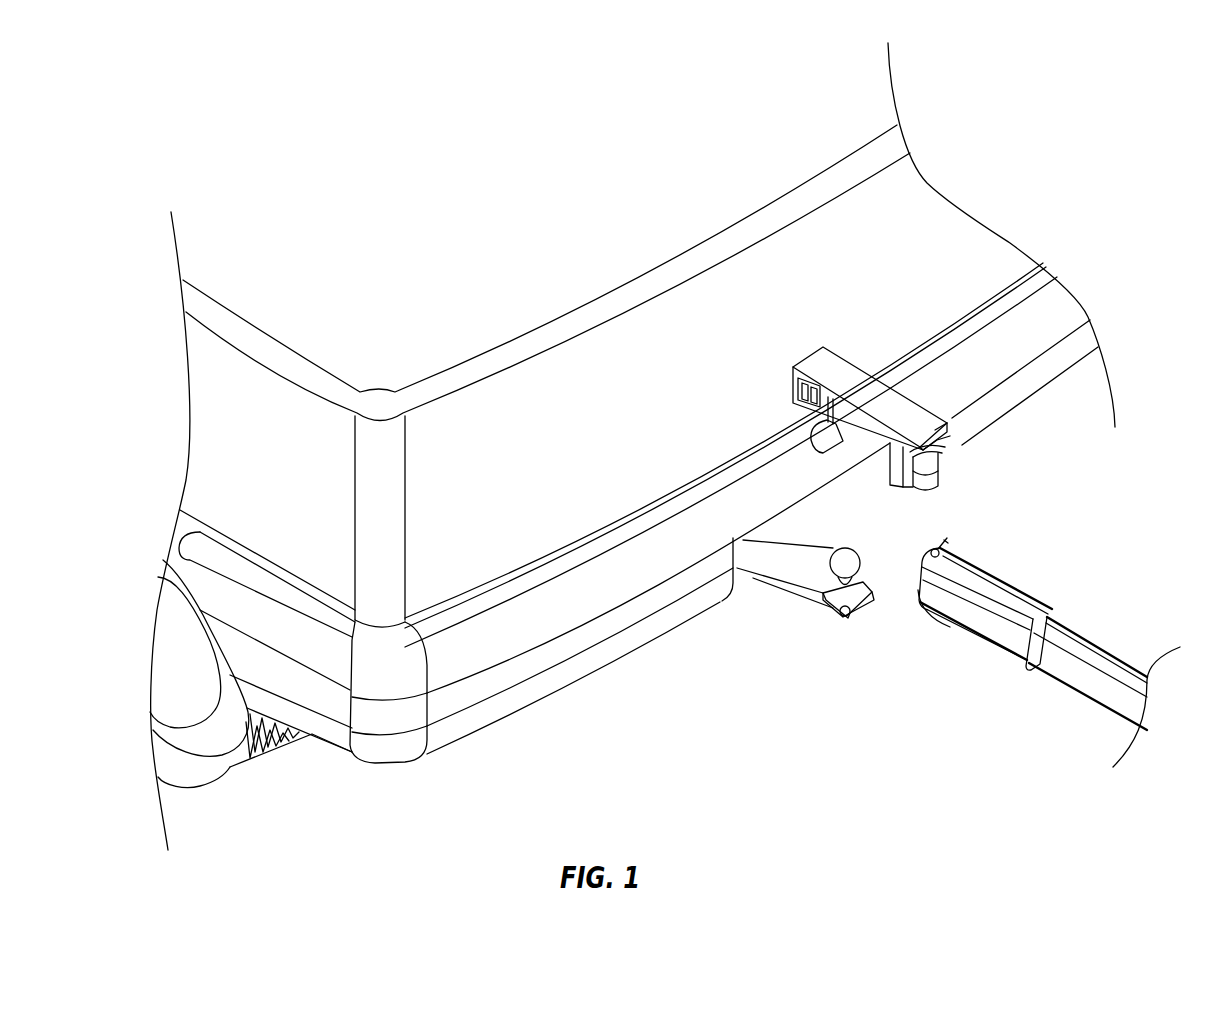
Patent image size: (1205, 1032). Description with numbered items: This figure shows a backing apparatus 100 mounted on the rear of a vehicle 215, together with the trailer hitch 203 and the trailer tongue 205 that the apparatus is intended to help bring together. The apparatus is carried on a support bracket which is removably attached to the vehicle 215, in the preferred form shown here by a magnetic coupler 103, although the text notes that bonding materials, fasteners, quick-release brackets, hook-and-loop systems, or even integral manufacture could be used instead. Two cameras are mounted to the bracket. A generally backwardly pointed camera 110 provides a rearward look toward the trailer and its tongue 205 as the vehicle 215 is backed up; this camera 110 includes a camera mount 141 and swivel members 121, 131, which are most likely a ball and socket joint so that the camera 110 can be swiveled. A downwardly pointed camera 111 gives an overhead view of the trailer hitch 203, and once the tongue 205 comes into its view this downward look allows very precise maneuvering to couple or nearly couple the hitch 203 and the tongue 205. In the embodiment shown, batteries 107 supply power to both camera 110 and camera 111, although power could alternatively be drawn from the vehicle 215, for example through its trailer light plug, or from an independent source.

The backing apparatus 100 is at (894, 400).
The magnetic coupler 103 is at (806, 360).
The batteries 107 is at (796, 384).
The camera 110 is at (800, 440).
The camera 111 is at (940, 478).
The swivel member 121 is at (940, 446).
The swivel member 131 is at (948, 434).
The camera mount 141 is at (940, 418).
The trailer hitch 203 is at (843, 570).
The trailer tongue 205 is at (983, 574).
The vehicle 215 is at (551, 482).